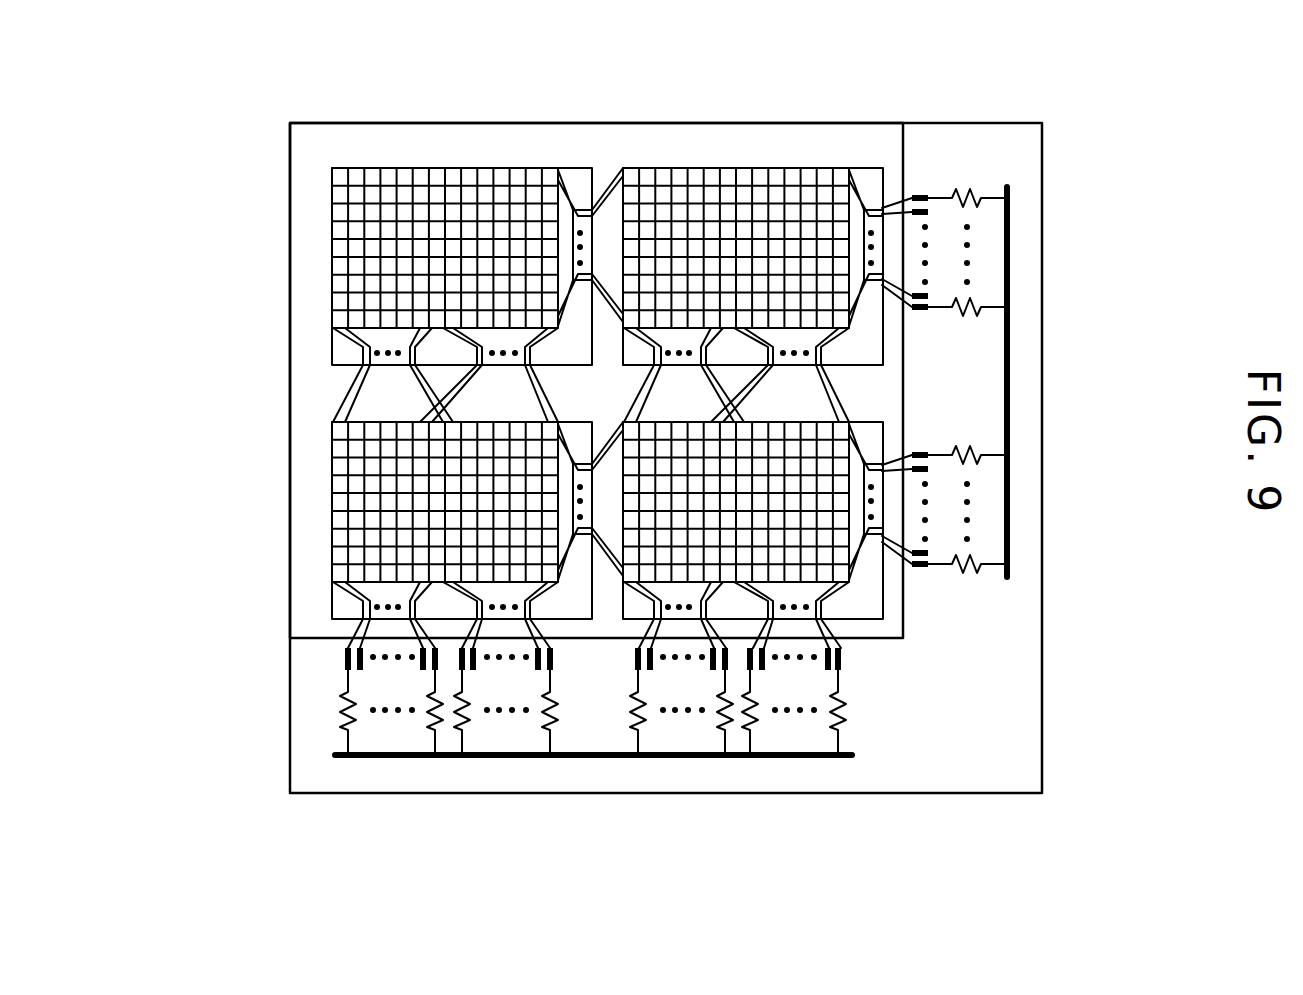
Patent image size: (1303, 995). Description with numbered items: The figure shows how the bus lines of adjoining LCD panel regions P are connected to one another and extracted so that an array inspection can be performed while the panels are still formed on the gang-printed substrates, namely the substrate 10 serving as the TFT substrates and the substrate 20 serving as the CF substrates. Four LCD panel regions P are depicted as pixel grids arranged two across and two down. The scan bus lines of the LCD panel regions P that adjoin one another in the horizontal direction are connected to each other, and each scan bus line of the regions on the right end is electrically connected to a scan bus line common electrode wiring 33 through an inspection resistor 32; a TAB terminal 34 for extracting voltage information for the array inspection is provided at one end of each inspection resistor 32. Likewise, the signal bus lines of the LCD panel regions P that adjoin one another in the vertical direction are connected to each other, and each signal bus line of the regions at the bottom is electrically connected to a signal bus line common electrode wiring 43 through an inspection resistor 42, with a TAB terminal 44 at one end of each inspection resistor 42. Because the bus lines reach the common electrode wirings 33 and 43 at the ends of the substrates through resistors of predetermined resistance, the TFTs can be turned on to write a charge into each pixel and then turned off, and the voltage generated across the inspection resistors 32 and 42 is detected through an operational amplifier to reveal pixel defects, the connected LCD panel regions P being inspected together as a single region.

The substrate 10 is at (1046, 761).
The substrate 20 is at (908, 634).
The inspection resistor 32 is at (968, 190).
The scan bus line common electrode wiring 33 is at (1010, 250).
The TAB terminal 34 is at (920, 194).
The inspection resistor 42 is at (342, 710).
The signal bus line common electrode wiring 43 is at (402, 758).
The TAB terminal 44 is at (344, 660).
The LCD panel region P is at (474, 165).